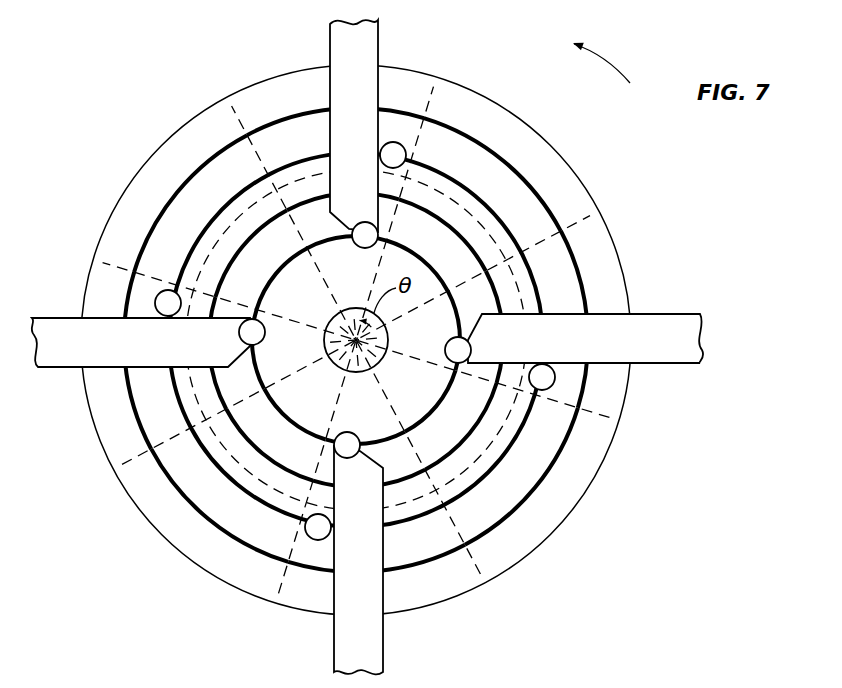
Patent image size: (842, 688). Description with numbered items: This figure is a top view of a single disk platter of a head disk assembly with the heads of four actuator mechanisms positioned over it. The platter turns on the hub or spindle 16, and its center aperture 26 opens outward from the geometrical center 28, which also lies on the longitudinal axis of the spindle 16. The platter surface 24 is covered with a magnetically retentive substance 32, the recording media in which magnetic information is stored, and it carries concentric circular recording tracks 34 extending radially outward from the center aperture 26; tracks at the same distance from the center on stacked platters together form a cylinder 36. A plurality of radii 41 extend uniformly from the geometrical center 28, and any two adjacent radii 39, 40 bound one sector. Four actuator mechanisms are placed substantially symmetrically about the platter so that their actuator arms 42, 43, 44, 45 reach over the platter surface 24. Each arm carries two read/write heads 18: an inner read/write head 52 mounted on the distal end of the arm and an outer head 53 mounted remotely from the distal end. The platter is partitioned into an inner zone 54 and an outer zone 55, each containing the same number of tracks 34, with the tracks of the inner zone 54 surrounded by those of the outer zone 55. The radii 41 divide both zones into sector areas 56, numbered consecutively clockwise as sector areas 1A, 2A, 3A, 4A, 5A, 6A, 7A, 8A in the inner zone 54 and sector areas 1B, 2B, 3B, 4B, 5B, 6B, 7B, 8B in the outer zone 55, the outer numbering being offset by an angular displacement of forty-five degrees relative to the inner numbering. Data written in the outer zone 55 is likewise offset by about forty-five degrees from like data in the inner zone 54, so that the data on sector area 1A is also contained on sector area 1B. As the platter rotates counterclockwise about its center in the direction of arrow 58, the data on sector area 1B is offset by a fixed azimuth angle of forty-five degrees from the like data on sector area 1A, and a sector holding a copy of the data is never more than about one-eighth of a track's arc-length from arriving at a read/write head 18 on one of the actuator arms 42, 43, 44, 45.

The hub or spindle 16 is at (389, 335).
The read/write heads 18 is at (560, 376).
The platter surface 24 is at (609, 266).
The center aperture 26 is at (325, 322).
The geometrical center 28 is at (363, 345).
The magnetically retentive substance 32 is at (523, 134).
The recording tracks 34 is at (543, 205).
The cylinder 36 is at (232, 181).
The radius 39 is at (133, 469).
The radius 40 is at (113, 268).
The radii 41 is at (485, 566).
The actuator arm 42 is at (641, 347).
The actuator arm 43 is at (338, 62).
The actuator arm 44 is at (76, 352).
The actuator arm 45 is at (343, 602).
The inner read/write head 52 is at (365, 222).
The outer head 53 is at (393, 142).
The inner zone 54 is at (280, 483).
The outer zone 55 is at (220, 473).
The sector areas 56 is at (317, 187).
The arrow 58 is at (618, 68).
The sector area 1a 1A is at (411, 248).
The sector area 2a 2A is at (463, 309).
The sector area 3a 3A is at (441, 432).
The sector area 4a 4A is at (381, 472).
The sector area 5a 5A is at (248, 444).
The sector area 6a 6A is at (273, 359).
The sector area 7a 7A is at (241, 269).
The sector area 8a 8A is at (326, 280).
The sector area 1b 1B is at (539, 279).
The sector area 2b 2B is at (524, 459).
The sector area 3b 3B is at (404, 559).
The sector area 4b 4B is at (211, 524).
The sector area 5b 5B is at (136, 412).
The sector area 6b 6B is at (158, 237).
The sector area 7b 7B is at (269, 152).
The sector area 8b 8B is at (466, 175).